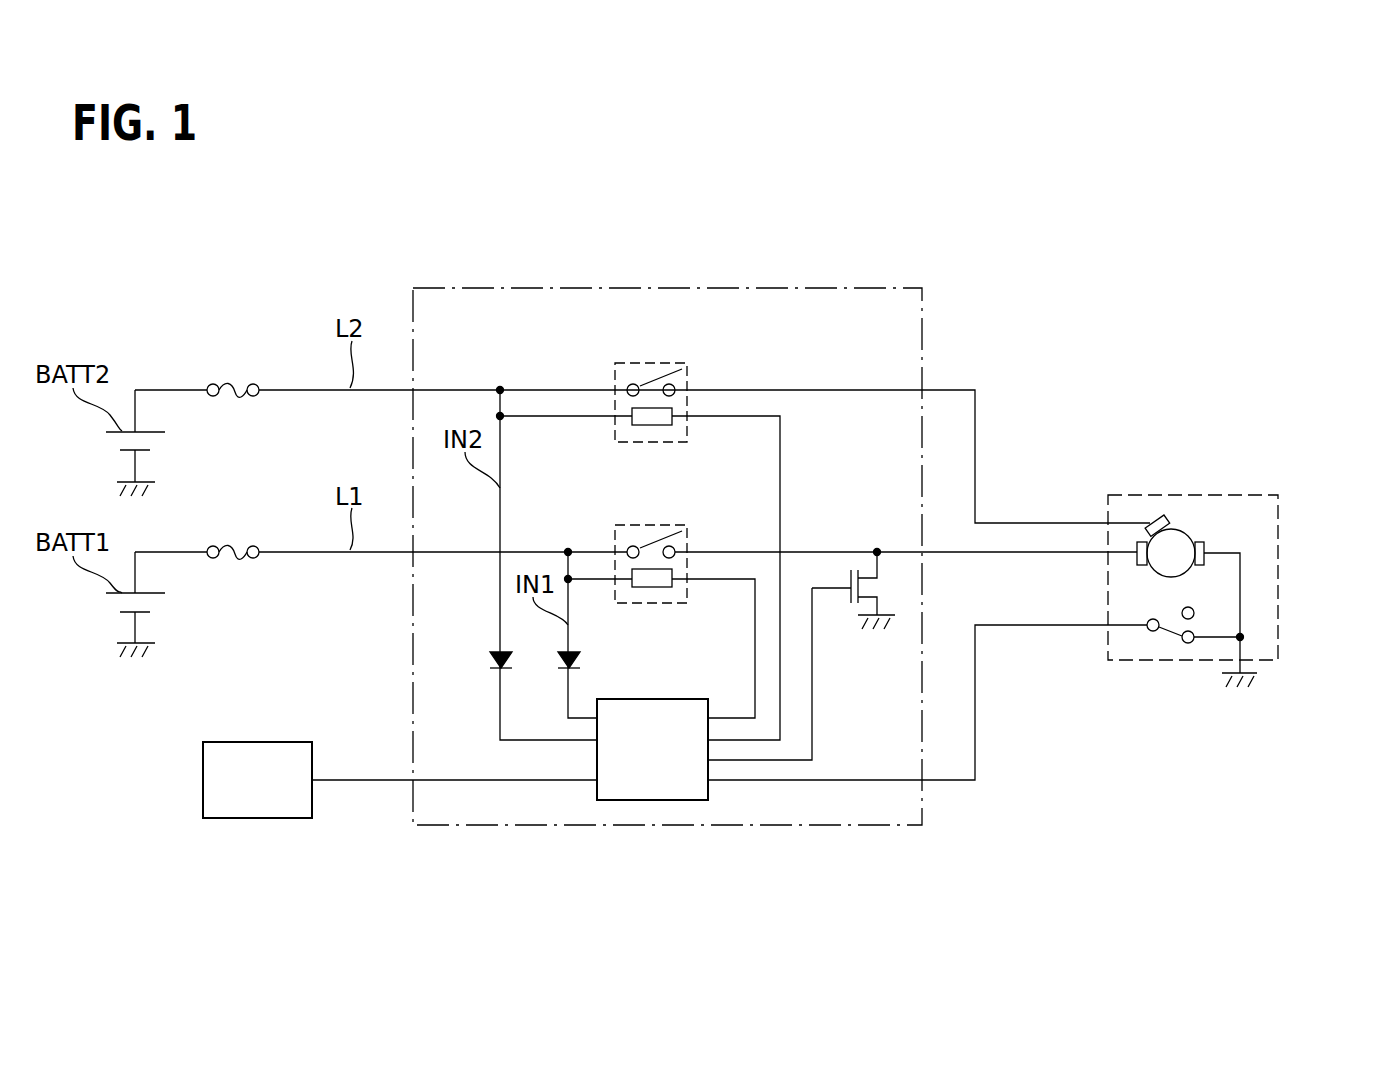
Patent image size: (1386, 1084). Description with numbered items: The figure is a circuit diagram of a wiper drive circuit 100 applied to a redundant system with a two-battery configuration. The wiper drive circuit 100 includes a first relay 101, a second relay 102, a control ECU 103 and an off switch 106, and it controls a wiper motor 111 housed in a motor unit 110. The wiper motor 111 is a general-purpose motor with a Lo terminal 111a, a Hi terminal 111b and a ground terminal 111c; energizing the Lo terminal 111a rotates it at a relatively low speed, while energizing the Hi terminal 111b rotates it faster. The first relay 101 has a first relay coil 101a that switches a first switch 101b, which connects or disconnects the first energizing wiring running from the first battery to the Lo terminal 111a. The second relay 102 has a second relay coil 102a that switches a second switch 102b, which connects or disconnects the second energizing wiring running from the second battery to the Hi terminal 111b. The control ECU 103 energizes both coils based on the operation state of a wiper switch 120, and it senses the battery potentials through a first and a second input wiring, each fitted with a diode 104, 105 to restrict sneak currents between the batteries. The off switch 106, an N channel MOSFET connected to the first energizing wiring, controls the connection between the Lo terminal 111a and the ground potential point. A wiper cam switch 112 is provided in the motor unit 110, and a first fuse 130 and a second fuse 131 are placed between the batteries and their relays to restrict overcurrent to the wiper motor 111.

The wiper drive circuit 100 is at (877, 283).
The first relay 101 is at (646, 567).
The first relay coil 101a is at (645, 590).
The first switch 101b is at (645, 546).
The second relay 102 is at (652, 406).
The second relay coil 102a is at (652, 428).
The second switch 102b is at (645, 384).
The control ECU 103 is at (655, 800).
The diode 104 is at (561, 655).
The diode 105 is at (490, 655).
The off switch 106 is at (843, 583).
The motor unit 110 is at (1187, 566).
The wiper motor 111 is at (1130, 507).
The Lo terminal 111a is at (1143, 565).
The Hi terminal 111b is at (1156, 520).
The ground terminal 111c is at (1203, 542).
The wiper cam switch 112 is at (1162, 632).
The wiper switch 120 is at (250, 820).
The first fuse 130 is at (238, 550).
The second fuse 131 is at (237, 388).